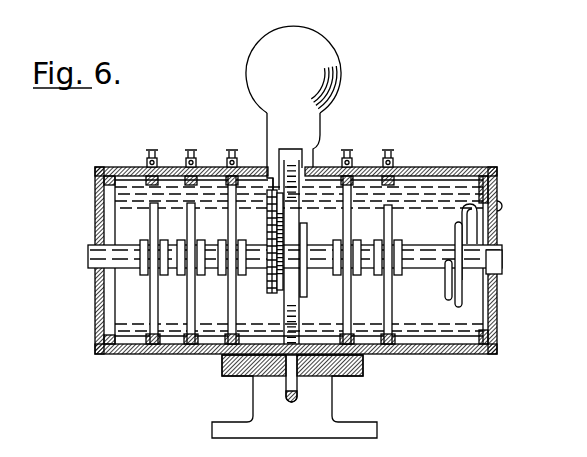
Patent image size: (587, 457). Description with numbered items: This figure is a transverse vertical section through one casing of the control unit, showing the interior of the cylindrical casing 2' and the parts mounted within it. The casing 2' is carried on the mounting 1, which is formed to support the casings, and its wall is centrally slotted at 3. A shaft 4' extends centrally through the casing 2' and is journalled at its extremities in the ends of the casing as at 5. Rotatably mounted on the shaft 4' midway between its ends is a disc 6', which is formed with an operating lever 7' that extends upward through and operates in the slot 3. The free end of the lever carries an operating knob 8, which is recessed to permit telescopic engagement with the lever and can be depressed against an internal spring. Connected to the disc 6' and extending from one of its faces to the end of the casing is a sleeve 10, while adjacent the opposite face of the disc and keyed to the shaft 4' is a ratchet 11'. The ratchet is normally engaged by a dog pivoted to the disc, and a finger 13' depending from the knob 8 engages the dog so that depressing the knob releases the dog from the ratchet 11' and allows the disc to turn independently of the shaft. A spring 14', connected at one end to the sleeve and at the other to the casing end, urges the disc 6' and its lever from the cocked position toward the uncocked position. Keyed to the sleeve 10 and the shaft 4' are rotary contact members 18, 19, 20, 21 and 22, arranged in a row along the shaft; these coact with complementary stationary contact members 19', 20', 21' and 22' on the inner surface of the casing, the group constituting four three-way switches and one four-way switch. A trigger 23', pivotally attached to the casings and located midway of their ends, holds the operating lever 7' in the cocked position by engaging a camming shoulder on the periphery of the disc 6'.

The mounting 1 is at (334, 403).
The cylindrical casing 2' is at (298, 270).
The slot 3 is at (270, 176).
The shaft 4' is at (510, 255).
The journal 5 is at (92, 273).
The disc 6' is at (304, 283).
The operating lever 7' is at (301, 171).
The operating knob 8 is at (329, 51).
The sleeve 10 is at (425, 246).
The ratchet 11' is at (264, 241).
The finger 13' is at (260, 236).
The spring 14' is at (448, 268).
The rotary contact member 18 is at (384, 222).
The rotary contact member 19 is at (339, 247).
The stationary contact member 19' is at (361, 337).
The rotary contact member 20 is at (242, 247).
The stationary contact member 20' is at (248, 336).
The rotary contact member 21 is at (199, 247).
The stationary contact member 21' is at (204, 337).
The rotary contact member 22 is at (145, 247).
The stationary contact member 22' is at (139, 337).
The trigger 23' is at (278, 388).